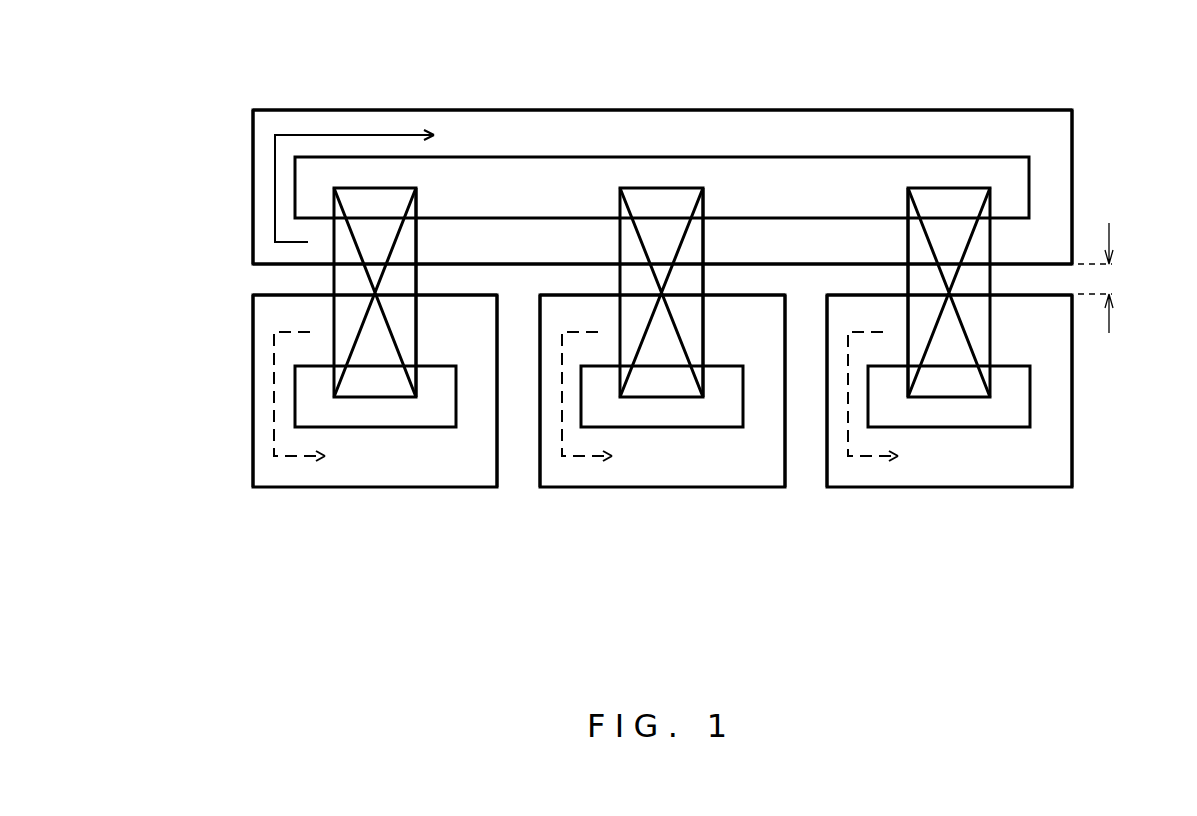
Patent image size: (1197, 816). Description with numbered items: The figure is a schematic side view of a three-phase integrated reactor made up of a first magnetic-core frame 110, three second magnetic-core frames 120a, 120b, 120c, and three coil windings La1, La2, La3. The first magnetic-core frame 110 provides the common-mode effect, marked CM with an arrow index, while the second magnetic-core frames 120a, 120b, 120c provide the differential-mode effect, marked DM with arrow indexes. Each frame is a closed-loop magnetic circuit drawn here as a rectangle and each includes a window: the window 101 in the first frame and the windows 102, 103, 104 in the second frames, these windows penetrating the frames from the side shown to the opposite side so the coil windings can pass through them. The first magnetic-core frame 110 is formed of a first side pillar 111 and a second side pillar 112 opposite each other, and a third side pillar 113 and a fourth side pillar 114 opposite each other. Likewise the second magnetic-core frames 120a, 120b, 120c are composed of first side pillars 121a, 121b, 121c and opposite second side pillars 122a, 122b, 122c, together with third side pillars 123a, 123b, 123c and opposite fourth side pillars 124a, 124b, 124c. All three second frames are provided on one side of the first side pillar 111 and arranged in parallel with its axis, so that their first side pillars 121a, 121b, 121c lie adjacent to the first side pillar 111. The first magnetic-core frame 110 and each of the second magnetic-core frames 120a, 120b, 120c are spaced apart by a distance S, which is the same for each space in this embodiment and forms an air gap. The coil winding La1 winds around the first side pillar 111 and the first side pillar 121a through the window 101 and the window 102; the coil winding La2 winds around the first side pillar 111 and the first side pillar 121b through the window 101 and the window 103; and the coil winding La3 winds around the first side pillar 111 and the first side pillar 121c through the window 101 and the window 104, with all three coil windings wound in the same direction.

The first magnetic-core frame 110 is at (661, 143).
The first side pillar 111 is at (573, 233).
The second side pillar 112 is at (660, 123).
The third side pillar 113 is at (260, 188).
The fourth side pillar 114 is at (1062, 187).
The window 101 is at (948, 168).
The window 102 is at (354, 418).
The window 103 is at (640, 418).
The window 104 is at (928, 418).
The second magnetic-core frame 120a is at (322, 464).
The second magnetic-core frame 120b is at (625, 427).
The second magnetic-core frame 120c is at (912, 427).
The first side pillar 121a is at (310, 312).
The first side pillar 121b is at (594, 312).
The first side pillar 121c is at (880, 312).
The second side pillar 122a is at (408, 472).
The second side pillar 122b is at (695, 472).
The second side pillar 122c is at (982, 472).
The third side pillar 123a is at (258, 392).
The third side pillar 123b is at (548, 403).
The third side pillar 123c is at (833, 403).
The fourth side pillar 124a is at (477, 397).
The fourth side pillar 124b is at (763, 397).
The fourth side pillar 124c is at (1050, 397).
The common-mode effect CM is at (352, 132).
The differential-mode effect DM is at (300, 458).
The coil winding La1 is at (418, 203).
The coil winding La2 is at (703, 203).
The coil winding La3 is at (906, 203).
The distance S is at (1106, 278).